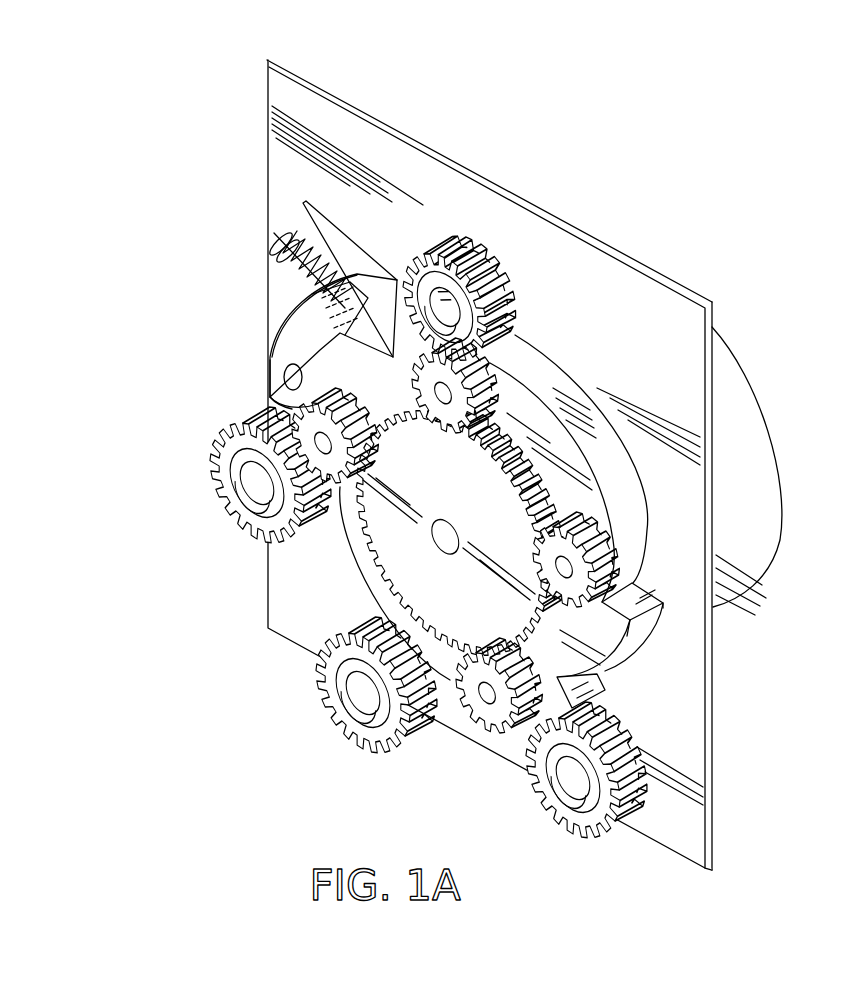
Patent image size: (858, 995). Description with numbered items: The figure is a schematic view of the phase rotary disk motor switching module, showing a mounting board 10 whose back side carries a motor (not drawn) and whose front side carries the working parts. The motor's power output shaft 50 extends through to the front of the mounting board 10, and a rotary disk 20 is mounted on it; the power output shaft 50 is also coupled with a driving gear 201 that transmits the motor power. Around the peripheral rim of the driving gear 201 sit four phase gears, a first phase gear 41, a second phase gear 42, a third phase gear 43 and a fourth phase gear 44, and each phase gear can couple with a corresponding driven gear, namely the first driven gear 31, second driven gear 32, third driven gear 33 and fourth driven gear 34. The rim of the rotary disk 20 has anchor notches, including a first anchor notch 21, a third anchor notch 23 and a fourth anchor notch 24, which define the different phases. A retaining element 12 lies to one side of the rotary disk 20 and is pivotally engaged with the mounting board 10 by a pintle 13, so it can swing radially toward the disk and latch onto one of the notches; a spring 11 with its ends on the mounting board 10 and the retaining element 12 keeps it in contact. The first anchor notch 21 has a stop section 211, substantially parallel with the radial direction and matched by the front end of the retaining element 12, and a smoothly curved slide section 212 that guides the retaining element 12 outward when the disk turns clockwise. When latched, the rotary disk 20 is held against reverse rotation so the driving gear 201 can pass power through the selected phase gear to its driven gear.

The mounting board 10 is at (300, 97).
The spring 11 is at (276, 254).
The retaining element 12 is at (300, 323).
The pintle 13 is at (271, 400).
The rotary disk 20 is at (608, 632).
The driving gear 201 is at (400, 578).
The first anchor notch 21 is at (273, 346).
The stop section 211 is at (275, 347).
The slide section 212 is at (285, 377).
The third anchor notch 23 is at (598, 678).
The fourth anchor notch 24 is at (644, 579).
The first driven gear 31 is at (427, 243).
The second driven gear 32 is at (330, 706).
The third driven gear 33 is at (215, 493).
The fourth driven gear 34 is at (545, 792).
The first phase gear 41 is at (518, 375).
The second phase gear 42 is at (482, 710).
The third phase gear 43 is at (625, 552).
The fourth phase gear 44 is at (340, 487).
The power output shaft 50 is at (433, 540).